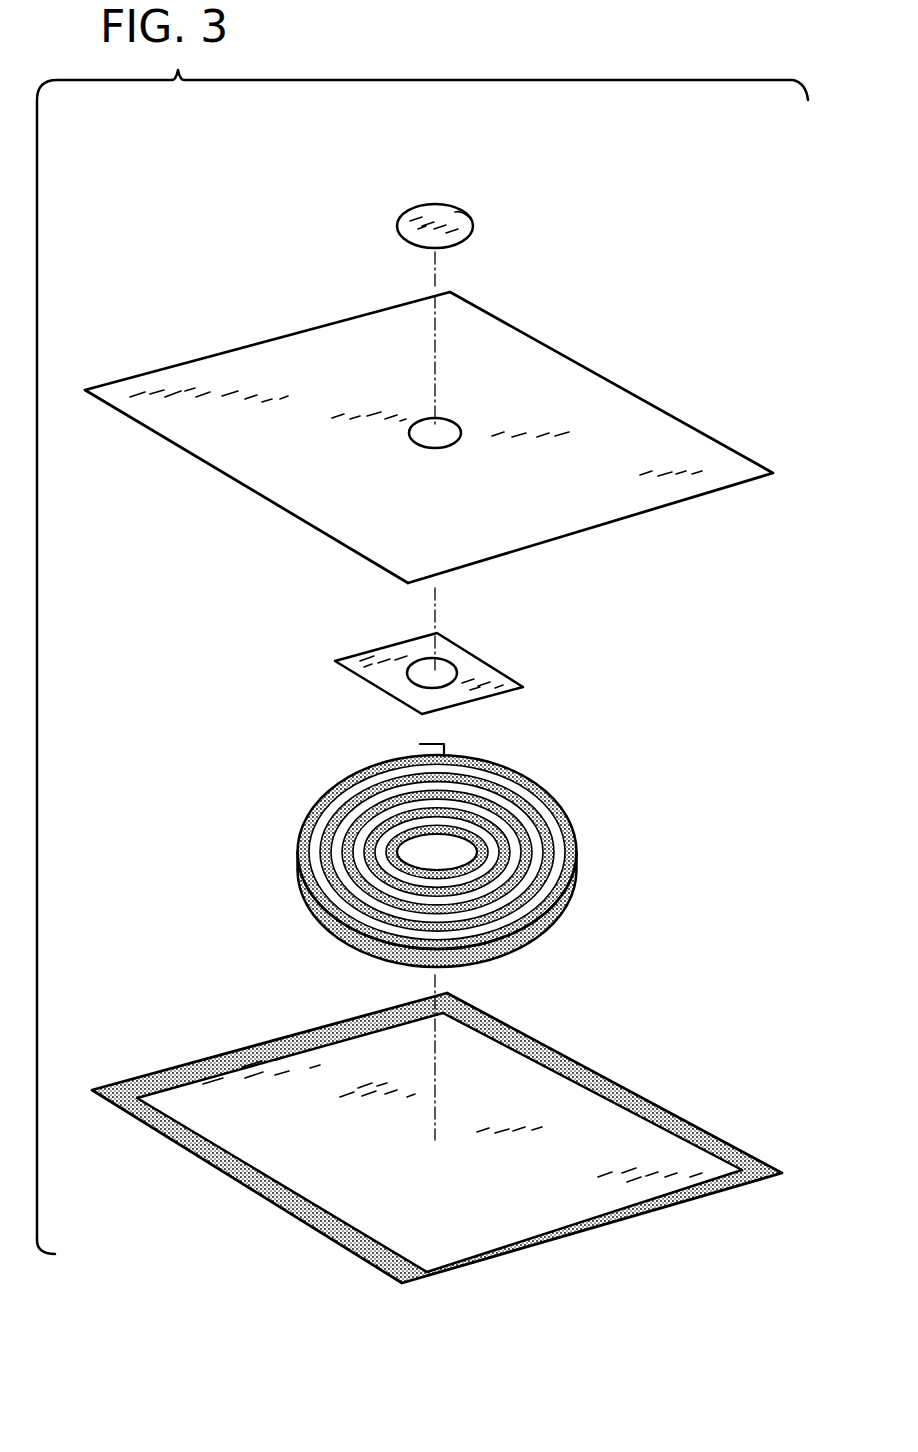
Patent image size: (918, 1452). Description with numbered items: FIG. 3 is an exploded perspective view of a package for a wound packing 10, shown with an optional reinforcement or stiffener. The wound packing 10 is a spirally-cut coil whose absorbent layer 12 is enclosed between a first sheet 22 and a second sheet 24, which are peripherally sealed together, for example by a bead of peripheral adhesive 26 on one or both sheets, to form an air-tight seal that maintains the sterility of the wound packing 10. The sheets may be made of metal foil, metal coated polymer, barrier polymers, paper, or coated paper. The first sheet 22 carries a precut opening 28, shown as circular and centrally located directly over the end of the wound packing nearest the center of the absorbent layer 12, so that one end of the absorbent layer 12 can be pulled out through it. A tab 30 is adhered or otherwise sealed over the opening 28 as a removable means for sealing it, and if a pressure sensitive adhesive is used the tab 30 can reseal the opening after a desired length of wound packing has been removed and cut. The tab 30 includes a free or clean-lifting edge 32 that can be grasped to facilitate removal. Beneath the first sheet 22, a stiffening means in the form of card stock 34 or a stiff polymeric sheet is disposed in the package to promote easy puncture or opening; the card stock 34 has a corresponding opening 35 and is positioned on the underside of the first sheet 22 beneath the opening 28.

The wound packing 10 is at (588, 837).
The absorbent layer 12 is at (510, 778).
The first sheet 22 is at (580, 385).
The second sheet 24 is at (530, 1212).
The peripheral adhesive 26 is at (590, 1077).
The precut opening 28 is at (414, 444).
The tab 30 is at (428, 212).
The clean-lifting edge 32 is at (471, 218).
The card stock 34 is at (487, 661).
The corresponding opening 35 is at (408, 684).